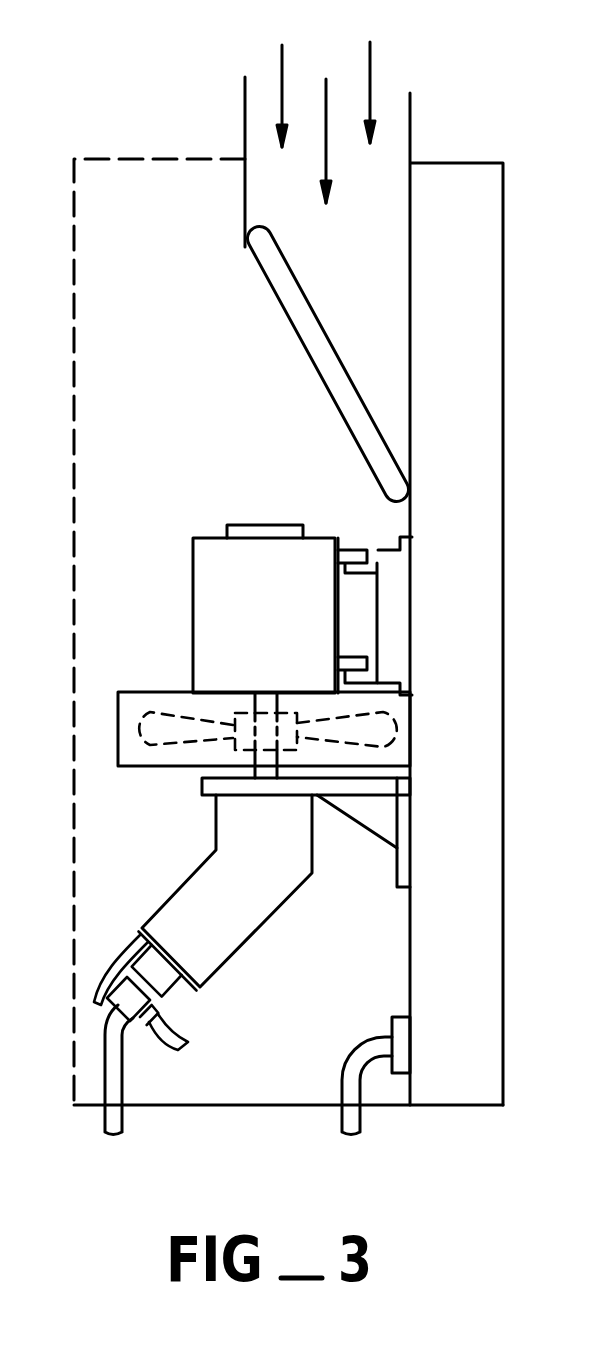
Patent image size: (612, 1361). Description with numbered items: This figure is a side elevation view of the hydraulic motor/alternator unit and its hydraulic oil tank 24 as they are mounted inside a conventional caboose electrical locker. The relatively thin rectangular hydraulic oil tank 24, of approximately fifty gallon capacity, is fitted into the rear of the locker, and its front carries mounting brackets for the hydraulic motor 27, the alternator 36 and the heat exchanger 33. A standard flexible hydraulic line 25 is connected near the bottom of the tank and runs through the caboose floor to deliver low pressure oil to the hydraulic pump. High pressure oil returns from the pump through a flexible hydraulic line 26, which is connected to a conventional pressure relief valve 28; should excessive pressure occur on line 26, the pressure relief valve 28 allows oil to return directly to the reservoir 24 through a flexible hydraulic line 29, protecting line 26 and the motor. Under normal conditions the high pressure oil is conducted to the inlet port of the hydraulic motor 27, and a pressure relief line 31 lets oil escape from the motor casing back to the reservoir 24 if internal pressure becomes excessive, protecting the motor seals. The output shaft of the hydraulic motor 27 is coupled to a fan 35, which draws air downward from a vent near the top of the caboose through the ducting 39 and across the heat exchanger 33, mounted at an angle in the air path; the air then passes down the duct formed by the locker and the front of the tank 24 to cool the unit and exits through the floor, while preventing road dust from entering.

The hydraulic oil tank 24 is at (468, 893).
The flexible hydraulic line 25 is at (365, 1040).
The flexible hydraulic line 26 is at (123, 1080).
The hydraulic motor 27 is at (266, 889).
The pressure relief valve 28 is at (130, 1003).
The flexible hydraulic line 29 is at (183, 1040).
The pressure relief line 31 is at (126, 950).
The heat exchanger 33 is at (290, 327).
The fan 35 is at (162, 745).
The alternator 36 is at (278, 635).
The ducting 39 is at (245, 193).